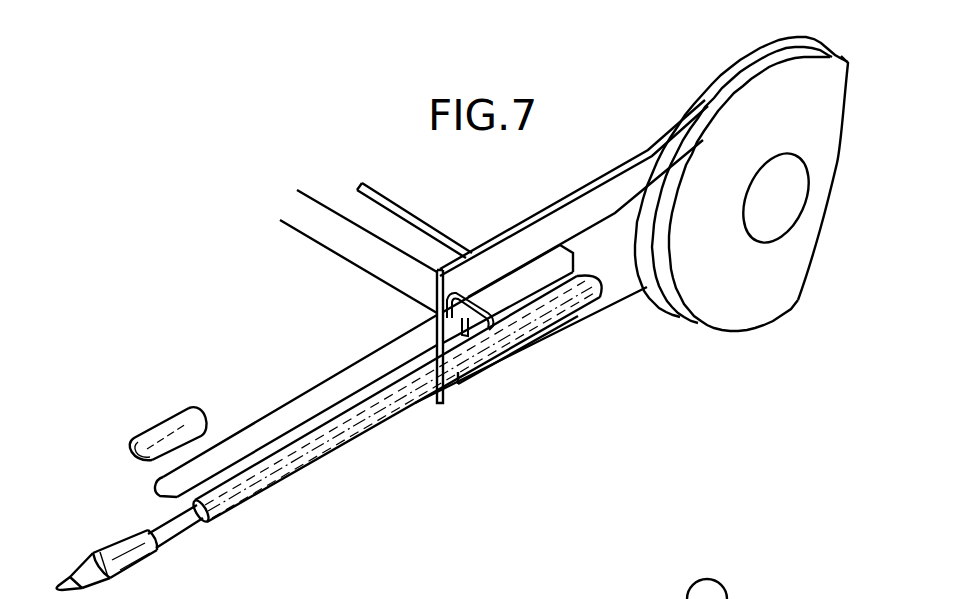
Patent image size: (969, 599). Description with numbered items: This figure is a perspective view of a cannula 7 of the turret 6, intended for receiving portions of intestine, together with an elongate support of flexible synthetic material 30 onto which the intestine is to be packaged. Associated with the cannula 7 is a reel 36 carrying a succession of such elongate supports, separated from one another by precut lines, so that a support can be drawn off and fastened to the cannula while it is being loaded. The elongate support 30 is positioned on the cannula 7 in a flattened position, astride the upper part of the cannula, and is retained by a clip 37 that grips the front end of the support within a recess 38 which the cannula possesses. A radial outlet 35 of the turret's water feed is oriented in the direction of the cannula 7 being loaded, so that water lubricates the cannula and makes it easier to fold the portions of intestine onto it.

The turret 6 is at (393, 298).
The cannula 7 is at (360, 420).
The elongate support of flexible synthetic material 30 is at (567, 228).
The radial outlet 35 is at (413, 217).
The reel 36 is at (760, 292).
The clip 37 is at (168, 423).
The recess 38 is at (178, 537).